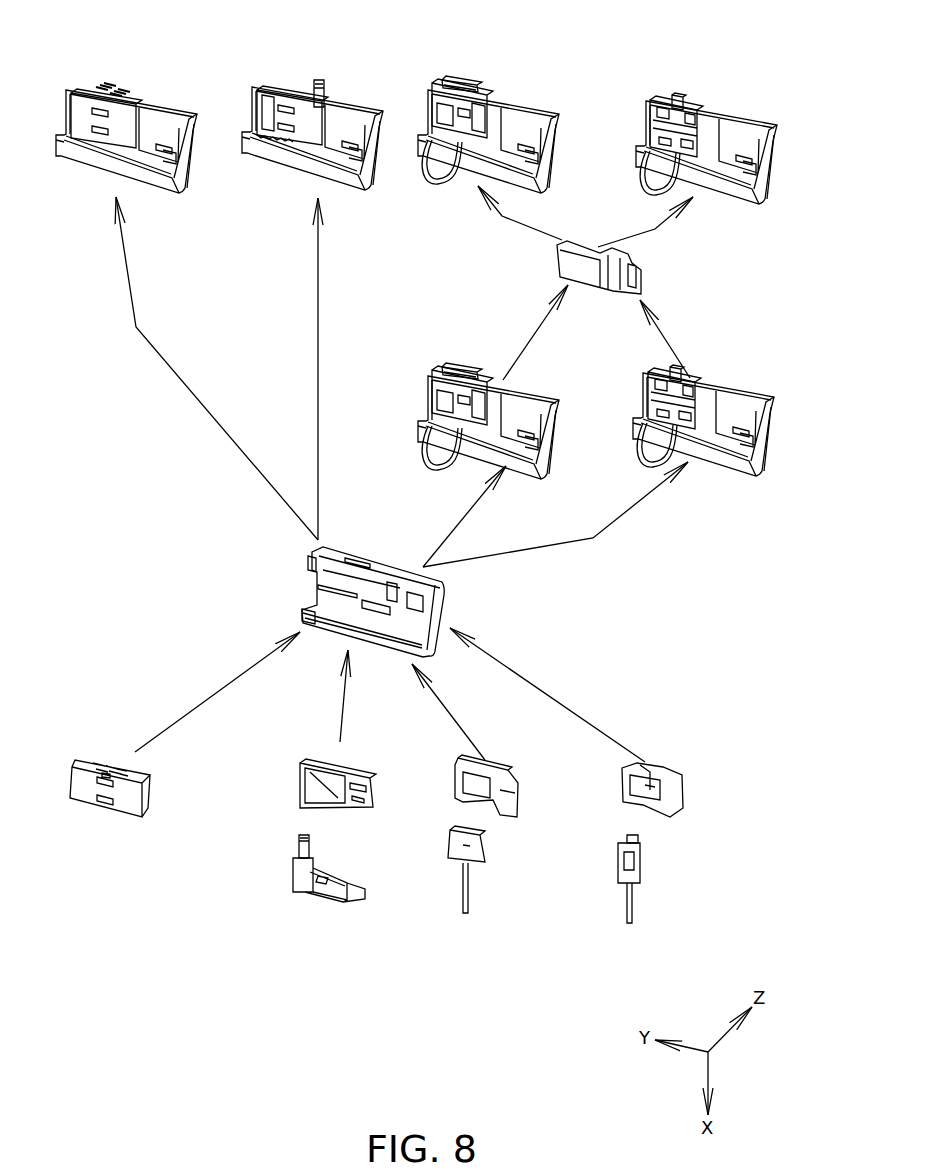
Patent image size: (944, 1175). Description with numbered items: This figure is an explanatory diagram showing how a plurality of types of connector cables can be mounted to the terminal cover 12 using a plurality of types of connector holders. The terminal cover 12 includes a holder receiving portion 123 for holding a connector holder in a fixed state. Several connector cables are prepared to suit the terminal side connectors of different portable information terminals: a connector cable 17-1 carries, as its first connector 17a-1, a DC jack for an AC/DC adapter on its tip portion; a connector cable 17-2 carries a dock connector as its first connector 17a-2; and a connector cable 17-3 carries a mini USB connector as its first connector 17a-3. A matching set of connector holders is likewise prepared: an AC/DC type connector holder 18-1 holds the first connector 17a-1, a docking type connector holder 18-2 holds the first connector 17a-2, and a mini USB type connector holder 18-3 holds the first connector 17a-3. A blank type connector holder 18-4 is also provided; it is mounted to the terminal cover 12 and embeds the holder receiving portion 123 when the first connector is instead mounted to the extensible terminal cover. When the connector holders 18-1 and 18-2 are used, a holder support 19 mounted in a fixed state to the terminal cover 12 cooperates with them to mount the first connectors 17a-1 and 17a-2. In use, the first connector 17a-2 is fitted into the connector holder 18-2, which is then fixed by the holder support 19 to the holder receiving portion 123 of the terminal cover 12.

The terminal cover 12 is at (156, 112).
The holder receiving portion 123 is at (317, 592).
The AC/DC type connector holder 18-1 is at (275, 118).
The docking type connector holder 18-2 is at (483, 92).
The mini USB type connector holder 18-3 is at (692, 110).
The blank type connector holder 18-4 is at (93, 121).
The connector cable 17-1 is at (332, 897).
The connector cable 17-2 is at (471, 906).
The connector cable 17-3 is at (633, 908).
The first connector 17a-1 is at (317, 83).
The first connector 17a-2 is at (458, 82).
The first connector 17a-3 is at (675, 95).
The holder support 19 is at (455, 165).